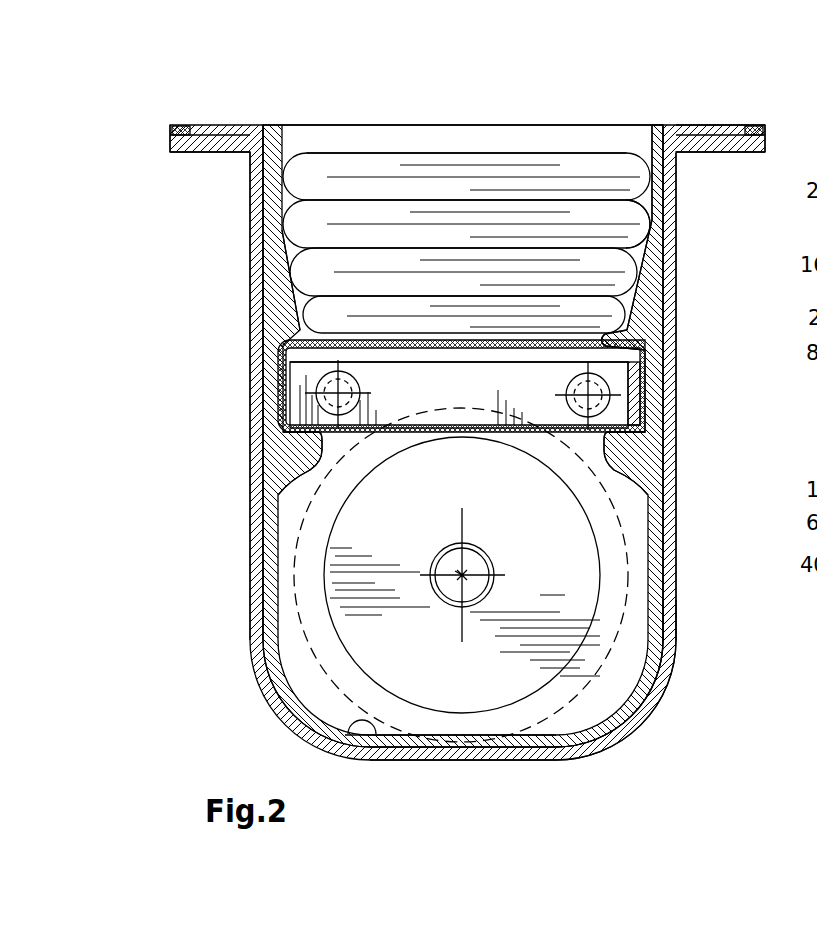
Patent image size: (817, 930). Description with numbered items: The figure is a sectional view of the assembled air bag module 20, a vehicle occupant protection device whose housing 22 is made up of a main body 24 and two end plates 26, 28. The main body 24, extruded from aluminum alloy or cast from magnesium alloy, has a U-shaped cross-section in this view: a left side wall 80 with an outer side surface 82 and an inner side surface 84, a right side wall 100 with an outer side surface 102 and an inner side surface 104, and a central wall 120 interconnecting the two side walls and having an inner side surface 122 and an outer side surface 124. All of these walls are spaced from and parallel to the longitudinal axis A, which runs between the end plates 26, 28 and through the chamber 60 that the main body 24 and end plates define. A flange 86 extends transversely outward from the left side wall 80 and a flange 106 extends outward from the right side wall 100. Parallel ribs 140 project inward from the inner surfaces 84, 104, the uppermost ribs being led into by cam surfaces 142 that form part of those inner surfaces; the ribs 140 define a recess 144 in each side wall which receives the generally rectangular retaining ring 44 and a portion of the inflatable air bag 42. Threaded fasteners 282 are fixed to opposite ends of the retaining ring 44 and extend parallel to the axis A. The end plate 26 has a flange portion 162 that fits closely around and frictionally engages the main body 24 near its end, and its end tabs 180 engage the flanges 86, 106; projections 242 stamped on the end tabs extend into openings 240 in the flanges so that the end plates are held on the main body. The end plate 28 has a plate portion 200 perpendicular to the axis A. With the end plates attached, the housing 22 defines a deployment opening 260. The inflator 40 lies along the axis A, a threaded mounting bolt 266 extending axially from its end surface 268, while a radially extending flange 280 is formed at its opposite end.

The air bag module 20 is at (200, 448).
The housing 22 is at (512, 62).
The main body 24 is at (647, 120).
The end plate 26 is at (682, 590).
The end plate 28 is at (557, 122).
The inflator 40 is at (325, 625).
The inflatable air bag 42 is at (633, 225).
The retaining ring 44 is at (415, 398).
The chamber 60 is at (298, 495).
The left side wall 80 is at (258, 313).
The outer side surface 82 is at (256, 212).
The inner side surface 84 is at (302, 126).
The flange 86 is at (228, 130).
The right side wall 100 is at (680, 314).
The outer side surface 102 is at (670, 235).
The inner side surface 104 is at (654, 154).
The flange 106 is at (673, 122).
The central wall 120 is at (500, 765).
The inner side surface 122 is at (358, 740).
The outer side surface 124 is at (397, 748).
The ribs 140 is at (292, 336).
The cam surfaces 142 is at (296, 262).
The recess 144 is at (282, 392).
The flange portion 162 is at (632, 688).
The end tabs 180 is at (258, 155).
The plate portion 200 is at (455, 145).
The openings 240 is at (178, 126).
The projections 242 is at (205, 127).
The deployment opening 260 is at (314, 141).
The threaded mounting bolt 266 is at (448, 603).
The end surface 268 is at (570, 538).
The flange 280 is at (620, 628).
The threaded fasteners 282 is at (418, 400).
The longitudinal axis A is at (455, 571).